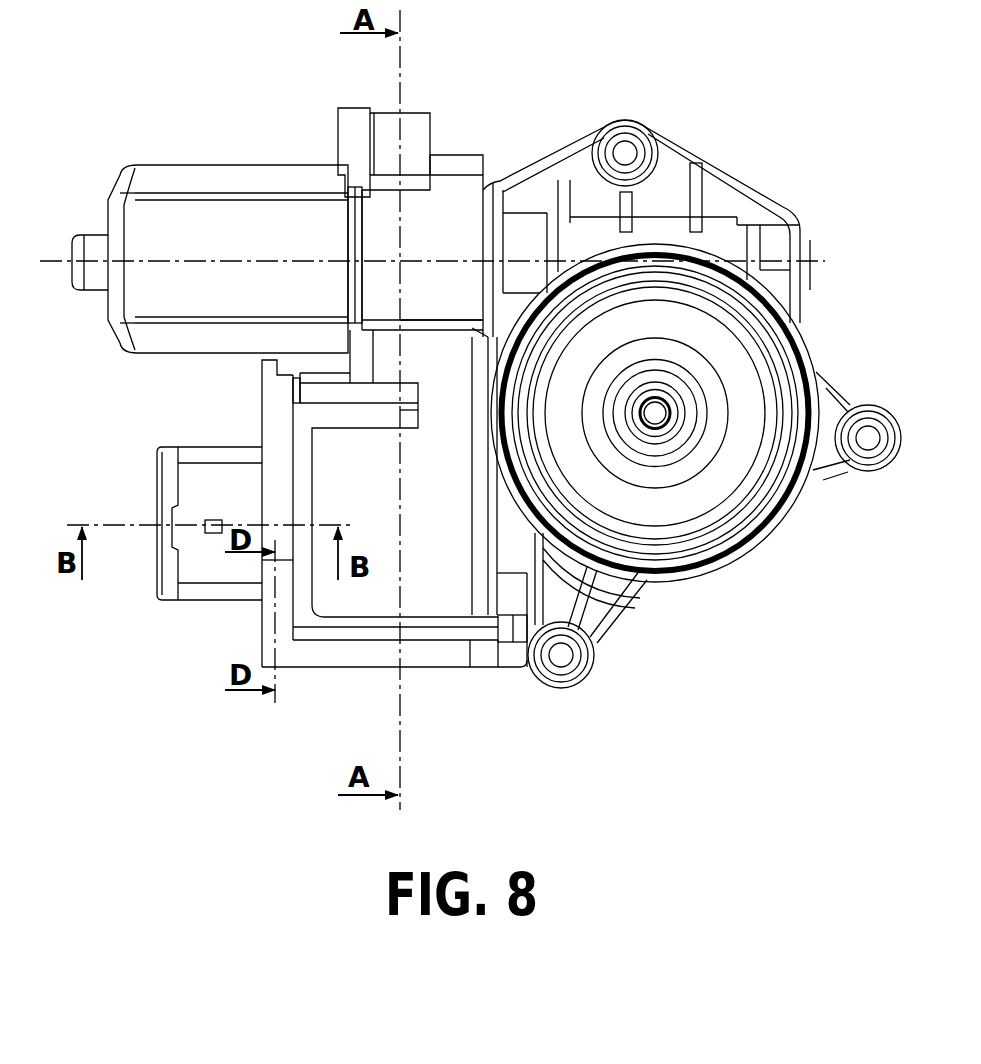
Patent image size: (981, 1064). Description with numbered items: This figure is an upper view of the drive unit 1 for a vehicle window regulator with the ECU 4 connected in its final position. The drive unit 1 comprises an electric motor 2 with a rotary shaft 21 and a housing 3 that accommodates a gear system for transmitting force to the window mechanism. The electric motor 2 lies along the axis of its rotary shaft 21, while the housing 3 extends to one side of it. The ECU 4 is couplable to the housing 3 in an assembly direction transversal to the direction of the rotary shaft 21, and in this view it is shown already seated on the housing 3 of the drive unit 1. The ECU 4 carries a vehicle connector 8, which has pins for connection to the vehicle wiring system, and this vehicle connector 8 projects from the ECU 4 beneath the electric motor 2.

The drive unit 1 is at (660, 195).
The electric motor 2 is at (250, 227).
The housing 3 is at (425, 520).
The ECU 4 is at (432, 651).
The vehicle connector 8 is at (213, 575).
The rotary shaft 21 is at (100, 252).